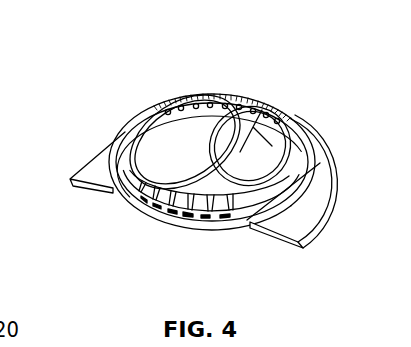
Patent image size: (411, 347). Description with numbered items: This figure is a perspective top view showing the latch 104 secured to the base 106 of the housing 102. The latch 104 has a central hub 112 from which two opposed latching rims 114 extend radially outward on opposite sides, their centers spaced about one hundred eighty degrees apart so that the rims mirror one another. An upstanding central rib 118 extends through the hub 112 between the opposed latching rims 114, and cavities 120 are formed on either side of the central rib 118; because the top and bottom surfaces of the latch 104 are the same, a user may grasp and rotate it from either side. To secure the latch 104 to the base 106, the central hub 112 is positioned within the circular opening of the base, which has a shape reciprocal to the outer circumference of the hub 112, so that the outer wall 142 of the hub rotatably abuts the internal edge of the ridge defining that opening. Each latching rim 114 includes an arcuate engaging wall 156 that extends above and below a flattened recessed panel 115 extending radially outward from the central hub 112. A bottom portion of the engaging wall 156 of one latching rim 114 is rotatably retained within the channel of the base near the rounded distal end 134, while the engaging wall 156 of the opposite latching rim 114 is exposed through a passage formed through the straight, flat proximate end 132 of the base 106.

The housing 102 is at (150, 112).
The latch 104 is at (250, 102).
The base 106 is at (100, 163).
The central hub 112 is at (290, 129).
The latching rims 114 is at (218, 93).
The flattened recessed panel 115 is at (142, 157).
The central rib 118 is at (142, 205).
The cavities 120 is at (131, 119).
The proximate end 132 is at (243, 224).
The distal end 134 is at (315, 134).
The outer wall 142 is at (163, 147).
The arcuate engaging wall 156 is at (243, 93).